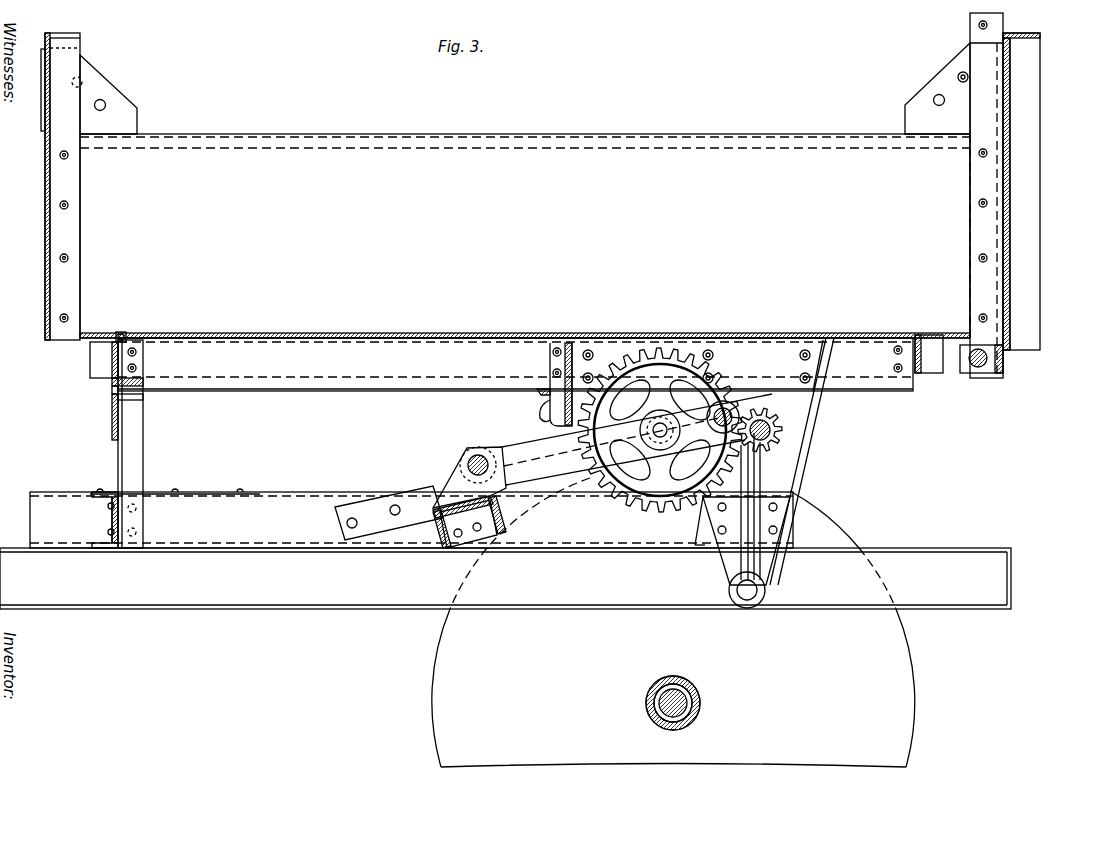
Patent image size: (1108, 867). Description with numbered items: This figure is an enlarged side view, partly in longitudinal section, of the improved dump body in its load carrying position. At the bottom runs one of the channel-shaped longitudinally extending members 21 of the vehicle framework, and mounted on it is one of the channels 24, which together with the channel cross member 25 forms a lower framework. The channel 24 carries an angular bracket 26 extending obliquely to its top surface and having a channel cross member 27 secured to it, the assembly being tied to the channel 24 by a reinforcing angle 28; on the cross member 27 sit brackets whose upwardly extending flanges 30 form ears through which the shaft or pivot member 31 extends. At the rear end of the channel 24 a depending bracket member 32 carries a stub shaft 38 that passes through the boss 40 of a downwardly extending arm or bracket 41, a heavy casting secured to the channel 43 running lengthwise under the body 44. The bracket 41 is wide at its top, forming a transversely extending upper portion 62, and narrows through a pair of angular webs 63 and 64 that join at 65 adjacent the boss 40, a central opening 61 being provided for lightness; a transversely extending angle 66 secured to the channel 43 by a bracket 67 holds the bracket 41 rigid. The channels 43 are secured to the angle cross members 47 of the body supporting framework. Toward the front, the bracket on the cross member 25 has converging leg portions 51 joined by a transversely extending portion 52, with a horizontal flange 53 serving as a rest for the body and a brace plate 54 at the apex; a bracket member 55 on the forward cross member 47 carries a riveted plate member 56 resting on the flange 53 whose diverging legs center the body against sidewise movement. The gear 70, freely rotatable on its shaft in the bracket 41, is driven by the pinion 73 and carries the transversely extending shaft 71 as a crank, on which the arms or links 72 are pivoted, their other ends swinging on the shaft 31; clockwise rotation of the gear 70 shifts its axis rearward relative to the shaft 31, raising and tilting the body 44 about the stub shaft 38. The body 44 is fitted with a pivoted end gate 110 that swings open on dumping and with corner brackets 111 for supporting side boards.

The longitudinally extending members 21 is at (338, 595).
The channels 24 is at (283, 504).
The cross member 25 is at (110, 515).
The brackets 26 is at (371, 508).
The cross member 27 is at (494, 513).
The reinforcing angles 28 is at (462, 537).
The upwardly extending flanges 30 is at (455, 484).
The shaft or pivot member 31 is at (476, 460).
The depending bracket members 32 is at (793, 494).
The stub shaft 38 is at (742, 604).
The boss 40 is at (762, 600).
The depending bracket member or downwardly extending arm 41 is at (806, 416).
The channels 43 is at (862, 365).
The body 44 is at (680, 152).
The cross members 47 is at (106, 360).
The leg portions 51 is at (140, 453).
The transversely extending portion 52 is at (122, 405).
The flange portion 53 is at (112, 400).
The brace plate 54 is at (112, 415).
The bracket member 55 is at (122, 343).
The plate member 56 is at (112, 381).
The central opening 61 is at (762, 458).
The transversely extending upper portion 62 is at (676, 373).
The angularly extending web or arm 63 is at (640, 465).
The angularly extending web or arm 64 is at (780, 441).
The joining portion 65 is at (770, 562).
The transversely extending angle 66 is at (538, 393).
The bracket 67 is at (553, 405).
The gear 70 is at (660, 417).
The transversely extending shaft 71 is at (723, 401).
The arms or links 72 is at (502, 448).
The pinions 73 is at (765, 408).
The end gate 110 is at (1007, 183).
The corner brackets 111 is at (117, 107).